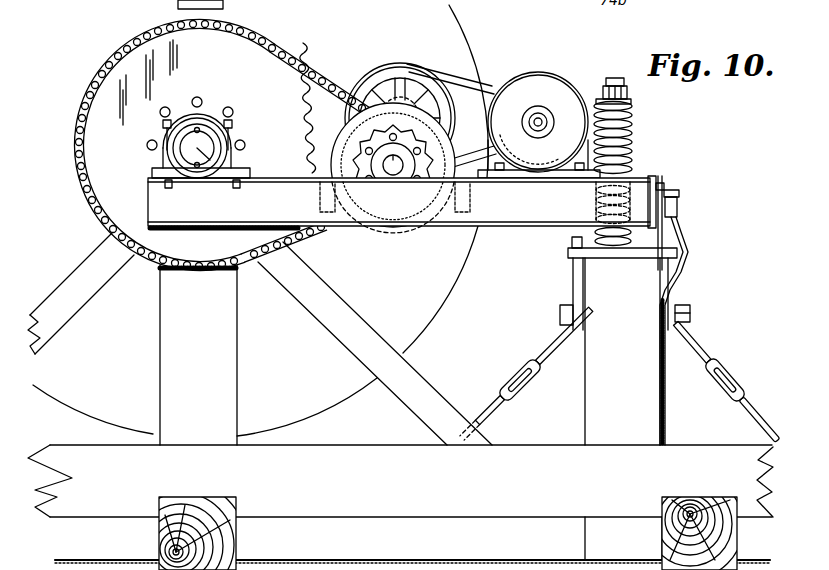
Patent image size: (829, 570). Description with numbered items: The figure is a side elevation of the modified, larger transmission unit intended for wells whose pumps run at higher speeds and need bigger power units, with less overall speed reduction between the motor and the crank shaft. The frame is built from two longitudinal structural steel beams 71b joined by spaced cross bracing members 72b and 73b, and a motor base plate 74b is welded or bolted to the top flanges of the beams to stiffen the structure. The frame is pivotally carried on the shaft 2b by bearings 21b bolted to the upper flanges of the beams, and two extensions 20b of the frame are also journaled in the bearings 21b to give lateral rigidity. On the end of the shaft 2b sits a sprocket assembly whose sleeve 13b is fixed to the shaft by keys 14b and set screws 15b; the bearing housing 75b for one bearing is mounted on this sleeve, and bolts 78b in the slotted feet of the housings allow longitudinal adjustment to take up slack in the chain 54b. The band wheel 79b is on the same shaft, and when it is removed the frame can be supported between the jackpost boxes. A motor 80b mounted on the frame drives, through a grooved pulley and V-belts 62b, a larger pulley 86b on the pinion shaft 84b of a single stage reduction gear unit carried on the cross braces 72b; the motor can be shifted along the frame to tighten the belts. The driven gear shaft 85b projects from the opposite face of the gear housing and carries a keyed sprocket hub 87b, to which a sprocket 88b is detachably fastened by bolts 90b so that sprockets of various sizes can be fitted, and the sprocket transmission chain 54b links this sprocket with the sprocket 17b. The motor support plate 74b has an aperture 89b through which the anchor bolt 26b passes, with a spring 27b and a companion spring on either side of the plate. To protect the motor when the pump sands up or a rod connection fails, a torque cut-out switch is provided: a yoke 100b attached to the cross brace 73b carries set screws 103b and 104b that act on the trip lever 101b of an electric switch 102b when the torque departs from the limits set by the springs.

The shaft 2b is at (207, 153).
The sleeve 13b is at (194, 168).
The keys 14b is at (196, 118).
The set screws 15b is at (199, 117).
The sprocket 17b is at (143, 63).
The extensions 20b is at (235, 7).
The bearings 21b is at (150, 122).
The anchor bolt 26b is at (620, 78).
The spring 27b is at (636, 131).
The sprocket transmission chain 54b is at (78, 127).
The belt 62b is at (463, 80).
The longitudinal structural steel beams 71b is at (520, 213).
The cross bracing members 72b is at (317, 208).
The cross bracing members 73b is at (472, 208).
The motor base plate 74b is at (568, 178).
The bearing housing 75b is at (238, 165).
The bolts 78b is at (250, 170).
The band wheel 79b is at (313, 400).
The motor 80b is at (567, 88).
The pinion shaft 84b is at (402, 108).
The gear shaft 85b is at (396, 172).
The pulley 86b is at (387, 72).
The sprocket hub 87b is at (383, 178).
The sprocket 88b is at (365, 172).
The aperture 89b is at (652, 177).
The bolts 90b is at (430, 142).
The yoke 100b is at (658, 186).
The trip lever 101b is at (677, 200).
The electric switch 102b is at (680, 205).
The set screw 103b is at (664, 192).
The set screw 104b is at (682, 218).